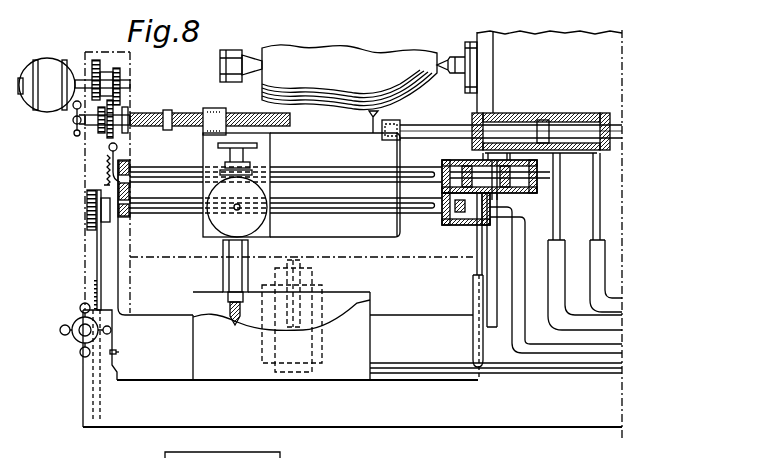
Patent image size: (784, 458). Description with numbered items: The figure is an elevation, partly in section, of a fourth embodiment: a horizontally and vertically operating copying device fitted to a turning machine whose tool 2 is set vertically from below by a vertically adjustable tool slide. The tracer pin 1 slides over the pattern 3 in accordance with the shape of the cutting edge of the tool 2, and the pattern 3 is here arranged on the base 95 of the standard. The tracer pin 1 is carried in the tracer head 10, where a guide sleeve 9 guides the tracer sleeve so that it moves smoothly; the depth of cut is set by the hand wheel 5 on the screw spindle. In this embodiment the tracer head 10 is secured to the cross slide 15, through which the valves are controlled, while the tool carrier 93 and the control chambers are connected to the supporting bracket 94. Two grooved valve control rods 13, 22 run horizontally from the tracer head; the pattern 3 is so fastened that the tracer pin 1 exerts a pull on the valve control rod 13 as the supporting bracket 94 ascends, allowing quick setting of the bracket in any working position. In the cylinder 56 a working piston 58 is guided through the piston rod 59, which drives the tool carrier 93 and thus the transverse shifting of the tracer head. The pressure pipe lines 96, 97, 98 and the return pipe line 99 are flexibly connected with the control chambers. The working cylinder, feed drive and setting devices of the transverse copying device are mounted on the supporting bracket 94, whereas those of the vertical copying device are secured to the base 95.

The tracer pin 1 is at (230, 322).
The tool 2 is at (367, 125).
The pattern 3 is at (253, 322).
The hand wheel 5 is at (218, 145).
The guide sleeve 9 is at (223, 270).
The tracer head 10 is at (215, 238).
The valve control rod 13 is at (337, 213).
The cross slide 15 is at (271, 150).
The valve control rod 22 is at (346, 163).
The cylinder 56 is at (513, 114).
The working piston 58 is at (545, 122).
The piston rod 59 is at (436, 130).
The tool carrier 93 is at (390, 232).
The supporting bracket 94 is at (413, 311).
The base of the standard 95 is at (444, 422).
The pressure pipe line 96 is at (473, 345).
The pressure pipe line 97 is at (559, 302).
The pressure pipe line 98 is at (592, 283).
The return pipe line 99 is at (512, 345).